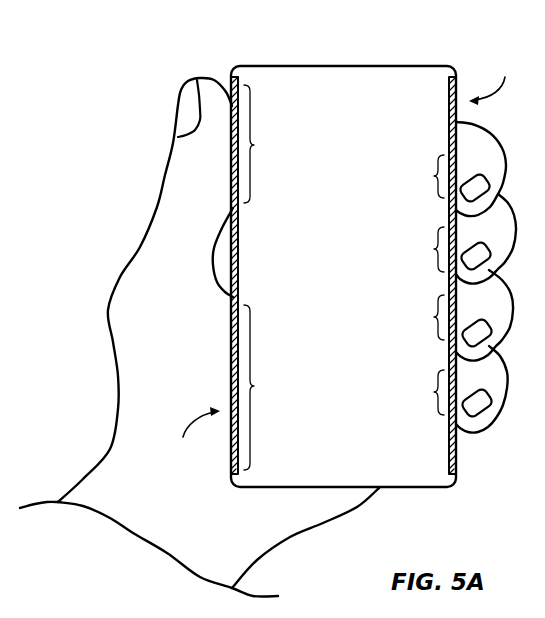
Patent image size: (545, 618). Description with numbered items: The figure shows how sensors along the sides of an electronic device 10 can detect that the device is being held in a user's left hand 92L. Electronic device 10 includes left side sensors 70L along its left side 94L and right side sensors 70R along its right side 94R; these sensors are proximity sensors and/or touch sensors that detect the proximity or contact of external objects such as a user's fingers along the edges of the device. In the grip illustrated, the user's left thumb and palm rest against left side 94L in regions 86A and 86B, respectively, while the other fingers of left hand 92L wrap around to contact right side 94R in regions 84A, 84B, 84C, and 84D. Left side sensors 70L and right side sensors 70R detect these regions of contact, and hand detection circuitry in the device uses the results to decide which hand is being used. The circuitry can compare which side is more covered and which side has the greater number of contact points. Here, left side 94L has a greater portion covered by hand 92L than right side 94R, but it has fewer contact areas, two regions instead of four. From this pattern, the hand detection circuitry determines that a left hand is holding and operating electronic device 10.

The electronic device 10 is at (365, 79).
The left side sensors 70L is at (239, 251).
The right side sensors 70R is at (448, 105).
The region 86A is at (265, 144).
The region 86B is at (265, 387).
The region 84A is at (451, 169).
The region 84B is at (456, 239).
The region 84C is at (455, 315).
The region 84D is at (452, 389).
The left hand 92L is at (147, 245).
The left side 94L is at (193, 433).
The right side 94R is at (494, 81).